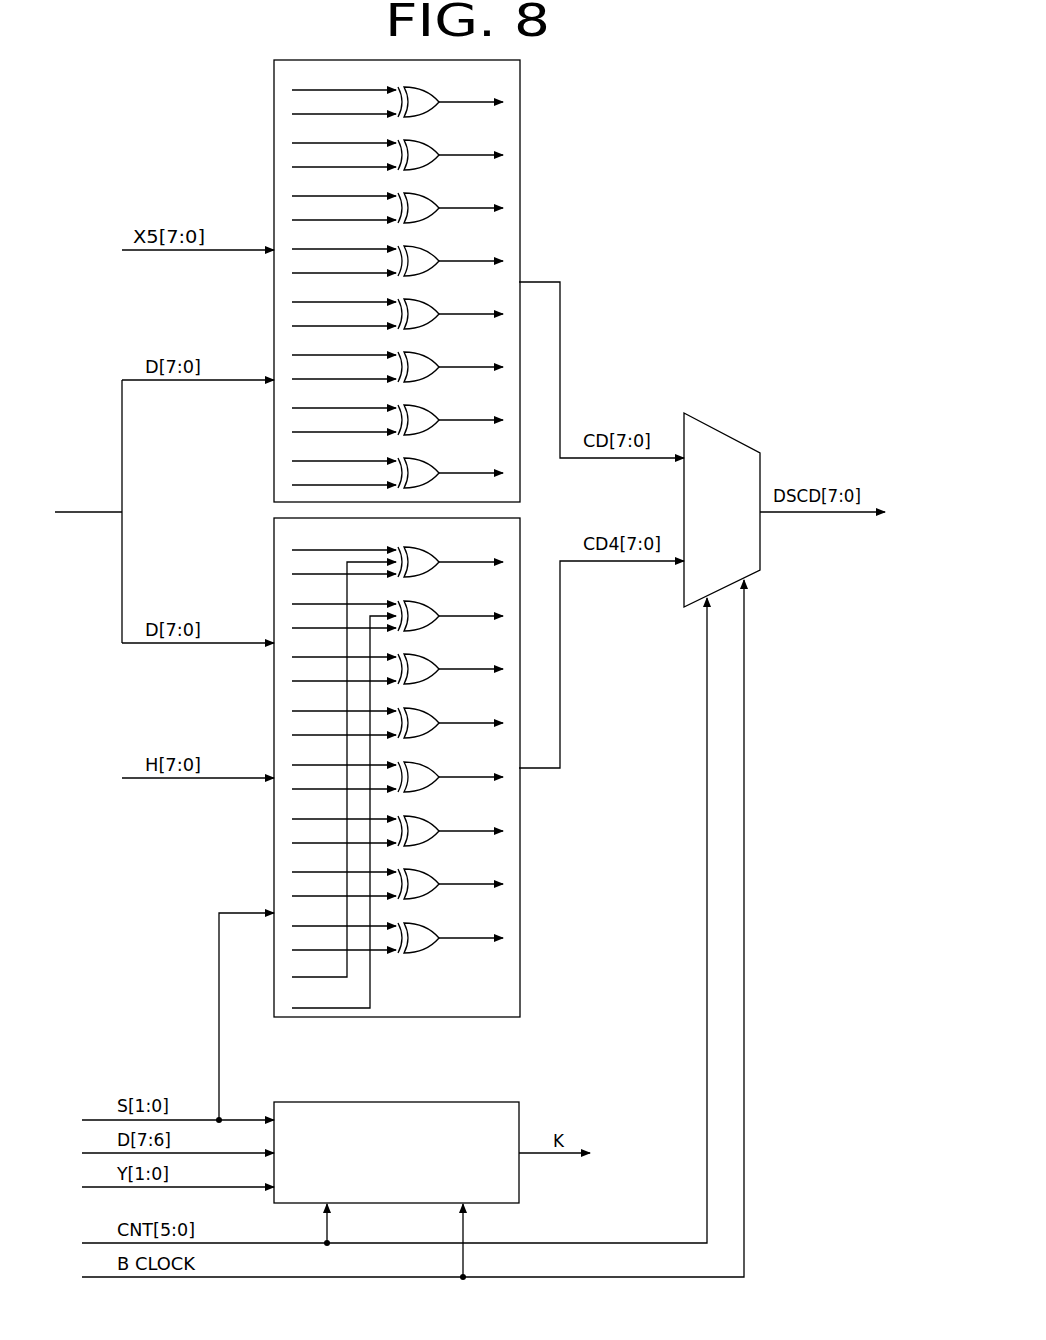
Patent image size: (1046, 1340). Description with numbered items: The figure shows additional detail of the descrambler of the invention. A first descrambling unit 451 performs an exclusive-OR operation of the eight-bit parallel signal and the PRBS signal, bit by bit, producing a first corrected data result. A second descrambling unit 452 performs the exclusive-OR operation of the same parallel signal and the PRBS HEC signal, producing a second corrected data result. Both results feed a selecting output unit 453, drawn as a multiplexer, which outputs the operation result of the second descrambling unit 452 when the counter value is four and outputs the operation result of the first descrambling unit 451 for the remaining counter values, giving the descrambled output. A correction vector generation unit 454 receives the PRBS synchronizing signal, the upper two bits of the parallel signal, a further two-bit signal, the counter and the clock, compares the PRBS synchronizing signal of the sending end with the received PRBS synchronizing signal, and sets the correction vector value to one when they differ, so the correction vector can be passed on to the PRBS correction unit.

The first descrambling unit 451 is at (521, 160).
The second descrambling unit 452 is at (521, 893).
The selecting output unit 453 is at (722, 431).
The correction vector generation unit 454 is at (395, 1101).